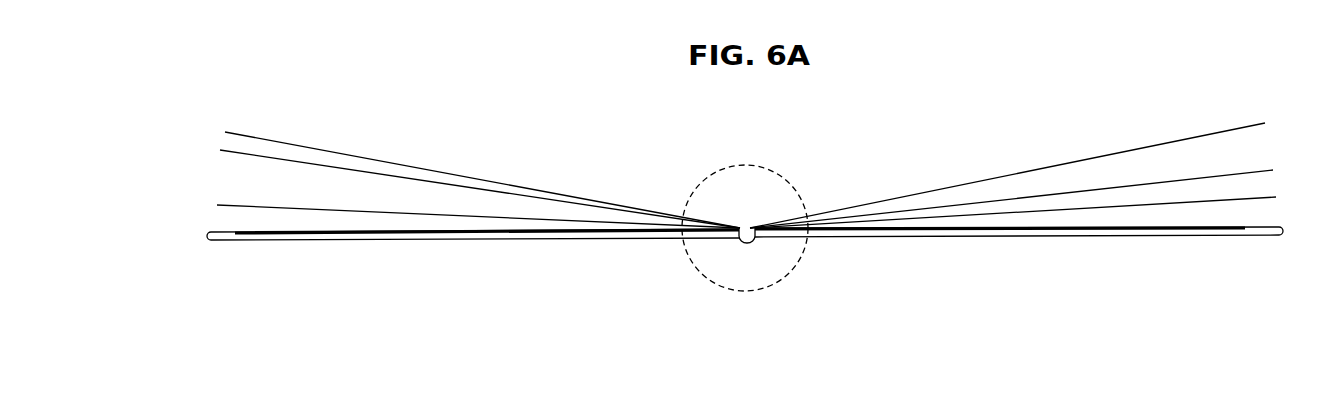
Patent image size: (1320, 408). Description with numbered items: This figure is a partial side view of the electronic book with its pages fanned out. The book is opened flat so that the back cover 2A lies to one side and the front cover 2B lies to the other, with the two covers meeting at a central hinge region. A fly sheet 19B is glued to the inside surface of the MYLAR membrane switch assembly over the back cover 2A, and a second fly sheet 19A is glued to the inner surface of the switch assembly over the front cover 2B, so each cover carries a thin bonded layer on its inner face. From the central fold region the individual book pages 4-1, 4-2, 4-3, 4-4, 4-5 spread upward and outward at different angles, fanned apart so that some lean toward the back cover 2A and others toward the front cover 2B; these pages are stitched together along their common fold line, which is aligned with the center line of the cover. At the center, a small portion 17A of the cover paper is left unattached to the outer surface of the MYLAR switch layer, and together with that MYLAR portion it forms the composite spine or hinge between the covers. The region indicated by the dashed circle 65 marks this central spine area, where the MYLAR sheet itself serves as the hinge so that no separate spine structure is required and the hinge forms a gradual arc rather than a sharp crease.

The back cover 2A is at (595, 238).
The front cover 2B is at (932, 234).
The portion of the cover paper 17A is at (747, 245).
The fly sheet 19A is at (1258, 225).
The fly sheet 19B is at (232, 232).
The page 4-1 is at (247, 205).
The page 4-2 is at (233, 150).
The page 4-3 is at (307, 147).
The page 4-4 is at (1248, 127).
The page 4-5 is at (1250, 170).
The enlarged detail region 65 is at (782, 172).